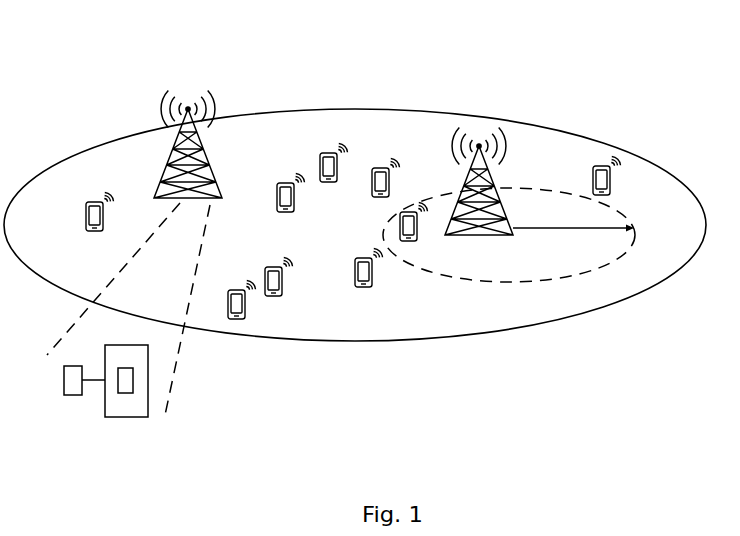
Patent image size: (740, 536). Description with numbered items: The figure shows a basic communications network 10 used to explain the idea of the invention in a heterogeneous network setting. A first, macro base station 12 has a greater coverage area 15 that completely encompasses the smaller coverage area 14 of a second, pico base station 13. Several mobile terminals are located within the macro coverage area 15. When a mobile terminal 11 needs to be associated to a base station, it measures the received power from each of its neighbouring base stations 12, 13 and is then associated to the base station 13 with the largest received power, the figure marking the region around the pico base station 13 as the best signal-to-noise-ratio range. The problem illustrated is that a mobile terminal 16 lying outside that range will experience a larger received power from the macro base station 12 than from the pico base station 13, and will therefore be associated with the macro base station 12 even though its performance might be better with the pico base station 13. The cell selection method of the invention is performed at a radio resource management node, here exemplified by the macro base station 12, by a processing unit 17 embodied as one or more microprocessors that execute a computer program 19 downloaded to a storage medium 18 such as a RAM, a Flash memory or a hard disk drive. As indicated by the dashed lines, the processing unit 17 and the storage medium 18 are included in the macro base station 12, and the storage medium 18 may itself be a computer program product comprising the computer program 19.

The communications network 10 is at (376, 55).
The mobile terminal 11 is at (596, 166).
The macro base station 12 is at (190, 97).
The pico base station 13 is at (478, 132).
The coverage area 14 is at (592, 270).
The coverage area 15 is at (405, 330).
The mobile terminal 16 is at (354, 284).
The processing unit 17 is at (64, 385).
The storage medium 18 is at (147, 359).
The computer program 19 is at (123, 393).